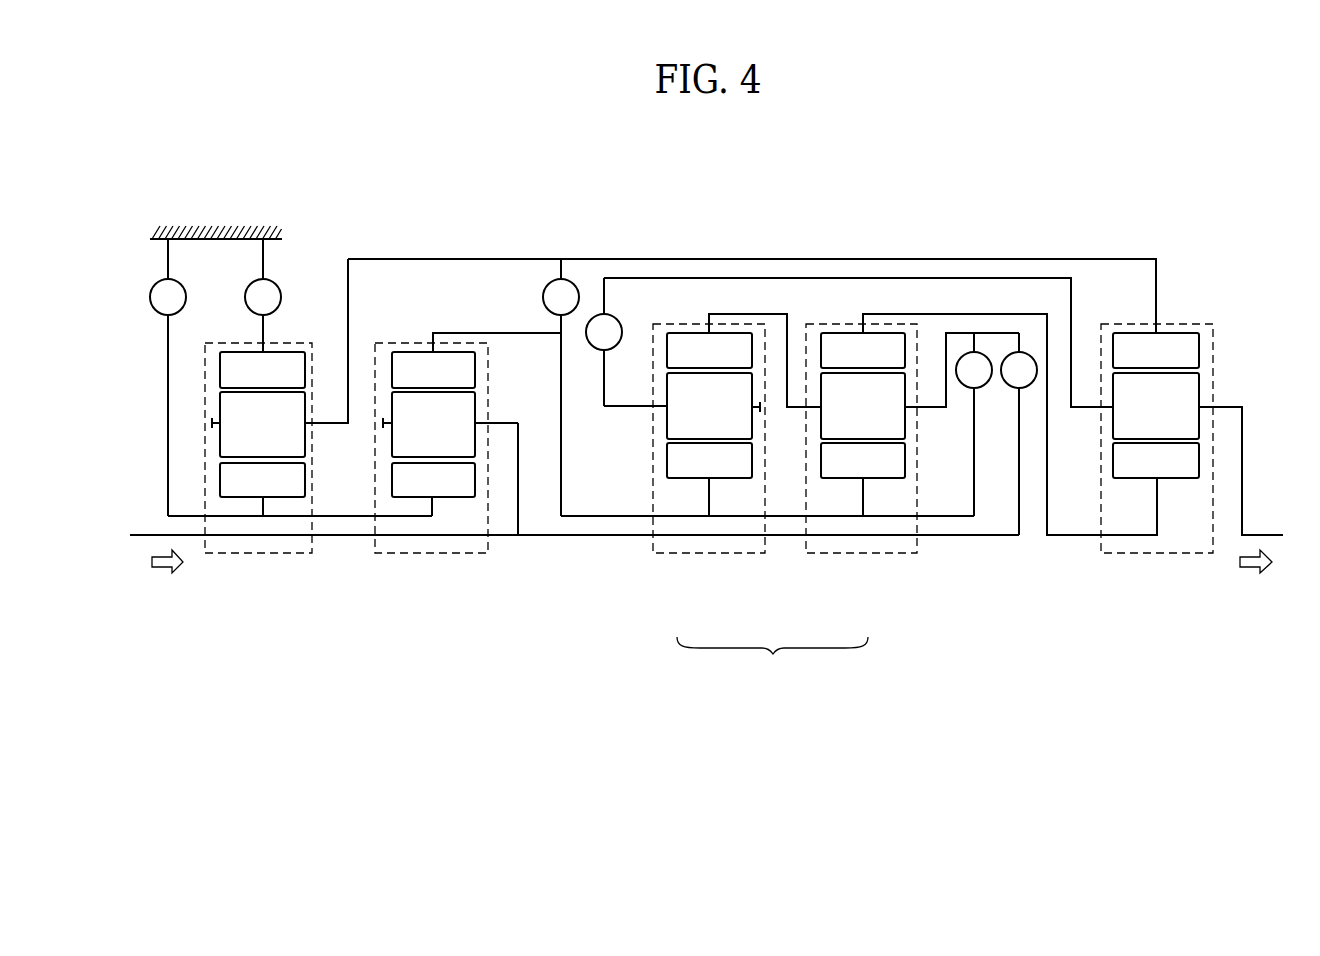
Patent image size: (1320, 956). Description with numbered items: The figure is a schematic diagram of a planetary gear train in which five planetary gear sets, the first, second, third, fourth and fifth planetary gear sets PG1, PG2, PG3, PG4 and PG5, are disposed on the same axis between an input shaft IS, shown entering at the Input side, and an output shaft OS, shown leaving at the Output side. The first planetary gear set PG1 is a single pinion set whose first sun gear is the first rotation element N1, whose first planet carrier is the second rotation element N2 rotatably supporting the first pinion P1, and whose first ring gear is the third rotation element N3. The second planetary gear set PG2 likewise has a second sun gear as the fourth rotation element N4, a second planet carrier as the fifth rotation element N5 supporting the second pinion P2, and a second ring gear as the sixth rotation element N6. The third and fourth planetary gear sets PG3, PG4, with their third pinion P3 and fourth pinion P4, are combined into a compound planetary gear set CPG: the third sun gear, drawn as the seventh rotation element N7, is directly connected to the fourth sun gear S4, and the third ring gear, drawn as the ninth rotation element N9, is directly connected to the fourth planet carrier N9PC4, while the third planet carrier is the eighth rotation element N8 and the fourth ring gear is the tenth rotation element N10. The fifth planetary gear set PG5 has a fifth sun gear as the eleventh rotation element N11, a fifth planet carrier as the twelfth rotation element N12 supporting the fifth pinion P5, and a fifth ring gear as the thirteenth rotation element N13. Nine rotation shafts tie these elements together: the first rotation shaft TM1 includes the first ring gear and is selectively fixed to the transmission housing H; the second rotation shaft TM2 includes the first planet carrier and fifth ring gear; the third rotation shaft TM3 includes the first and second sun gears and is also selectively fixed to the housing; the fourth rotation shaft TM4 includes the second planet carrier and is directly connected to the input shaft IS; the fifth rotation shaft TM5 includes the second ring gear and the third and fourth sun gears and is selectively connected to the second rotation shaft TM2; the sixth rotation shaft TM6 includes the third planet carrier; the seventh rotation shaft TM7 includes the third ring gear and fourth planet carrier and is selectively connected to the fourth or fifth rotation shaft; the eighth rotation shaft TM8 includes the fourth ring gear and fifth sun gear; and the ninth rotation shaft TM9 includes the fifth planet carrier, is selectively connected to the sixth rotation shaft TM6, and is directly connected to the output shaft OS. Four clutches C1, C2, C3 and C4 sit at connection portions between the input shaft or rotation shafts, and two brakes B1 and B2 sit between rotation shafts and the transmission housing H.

The transmission housing H is at (226, 224).
The first brake B1 is at (168, 377).
The second brake B2 is at (263, 295).
The first clutch C1 is at (1019, 434).
The second clutch C2 is at (604, 342).
The third clutch C3 is at (974, 424).
The fourth clutch C4 is at (506, 387).
The first rotation shaft TM1 is at (265, 326).
The second rotation shaft TM2 is at (591, 255).
The third rotation shaft TM3 is at (350, 520).
The fourth rotation shaft TM4 is at (517, 486).
The fifth rotation shaft TM5 is at (786, 520).
The sixth rotation shaft TM6 is at (634, 402).
The seventh rotation shaft TM7 is at (762, 312).
The eighth rotation shaft TM8 is at (953, 312).
The ninth rotation shaft TM9 is at (1079, 294).
The first planetary gear set PG1 is at (258, 489).
The second planetary gear set PG2 is at (431, 489).
The third planetary gear set PG3 is at (709, 479).
The fourth planetary gear set PG4 is at (861, 479).
The fifth planetary gear set PG5 is at (1157, 479).
The compound planetary gear set CPG is at (772, 659).
The first pinion P1 is at (258, 424).
The second pinion P2 is at (429, 424).
The third pinion P3 is at (713, 406).
The fourth pinion P4 is at (863, 406).
The fifth pinion P5 is at (1156, 406).
The first rotation element N1 is at (262, 489).
The second rotation element N2 is at (331, 425).
The third rotation element N3 is at (262, 370).
The fourth rotation element N4 is at (433, 489).
The fifth rotation element N5 is at (502, 423).
The sixth rotation element N6 is at (433, 370).
The seventh rotation element N7 is at (709, 479).
The fourth sun gear S4 is at (863, 479).
The eighth rotation element N8 is at (617, 407).
The ninth rotation element N9 is at (709, 350).
The fourth planet carrier N9PC4 is at (928, 410).
The tenth rotation element N10 is at (863, 350).
The eleventh rotation element N11 is at (1156, 460).
The twelfth rotation element N12 is at (1090, 410).
The thirteenth rotation element N13 is at (1156, 350).
The input shaft IS is at (328, 538).
The output shaft OS is at (1256, 532).
The input Input is at (167, 575).
The output Output is at (1254, 576).